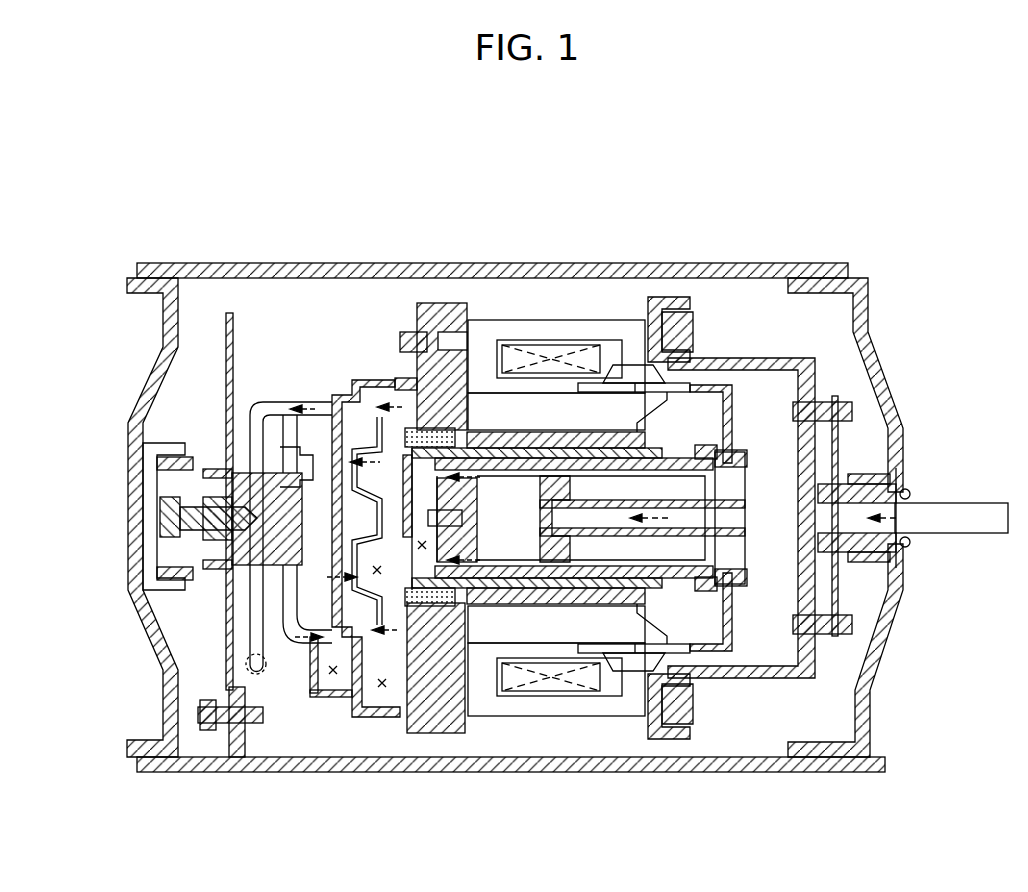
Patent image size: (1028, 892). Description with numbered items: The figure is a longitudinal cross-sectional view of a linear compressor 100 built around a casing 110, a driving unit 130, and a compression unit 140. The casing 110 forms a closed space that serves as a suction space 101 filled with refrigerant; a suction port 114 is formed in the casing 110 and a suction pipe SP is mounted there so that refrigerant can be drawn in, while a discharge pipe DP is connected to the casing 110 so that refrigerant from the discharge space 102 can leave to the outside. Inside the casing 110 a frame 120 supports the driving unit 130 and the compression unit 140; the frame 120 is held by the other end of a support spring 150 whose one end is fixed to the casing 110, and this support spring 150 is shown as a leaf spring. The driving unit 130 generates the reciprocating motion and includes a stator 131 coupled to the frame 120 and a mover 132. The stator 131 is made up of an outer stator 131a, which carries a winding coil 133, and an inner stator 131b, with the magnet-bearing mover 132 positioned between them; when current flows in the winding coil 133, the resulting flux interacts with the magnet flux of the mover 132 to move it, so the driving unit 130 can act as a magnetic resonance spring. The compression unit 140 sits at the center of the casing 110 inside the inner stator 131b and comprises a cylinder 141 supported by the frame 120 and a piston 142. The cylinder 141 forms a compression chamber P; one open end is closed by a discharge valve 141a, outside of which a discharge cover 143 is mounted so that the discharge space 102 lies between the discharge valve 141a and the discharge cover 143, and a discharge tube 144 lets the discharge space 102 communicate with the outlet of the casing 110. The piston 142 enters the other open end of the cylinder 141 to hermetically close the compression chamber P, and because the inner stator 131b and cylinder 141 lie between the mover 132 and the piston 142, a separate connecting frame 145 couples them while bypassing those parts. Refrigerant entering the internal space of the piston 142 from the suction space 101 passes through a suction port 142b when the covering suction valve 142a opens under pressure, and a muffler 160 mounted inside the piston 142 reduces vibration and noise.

The linear compressor 100 is at (940, 273).
The suction space 101 is at (832, 315).
The discharge space 102 is at (338, 672).
The casing 110 is at (773, 262).
The suction port 114 is at (912, 492).
The frame 120 is at (440, 388).
The driving unit 130 is at (685, 172).
The stator 131 is at (572, 212).
The outer stator 131a is at (495, 322).
The inner stator 131b is at (525, 405).
The mover 132 is at (623, 385).
The winding coil 133 is at (583, 353).
The compression unit 140 is at (620, 842).
The cylinder 141 is at (535, 588).
The discharge valve 141a is at (278, 480).
The piston 142 is at (585, 572).
The suction valve 142a is at (422, 557).
The suction port 142b is at (447, 560).
The discharge cover 143 is at (385, 437).
The discharge tube 144 is at (250, 617).
The connecting frame 145 is at (818, 660).
The support spring 150 is at (228, 388).
The muffler 160 is at (662, 537).
The compression chamber P is at (273, 543).
The discharge pipe DP is at (240, 670).
The suction pipe SP is at (980, 535).